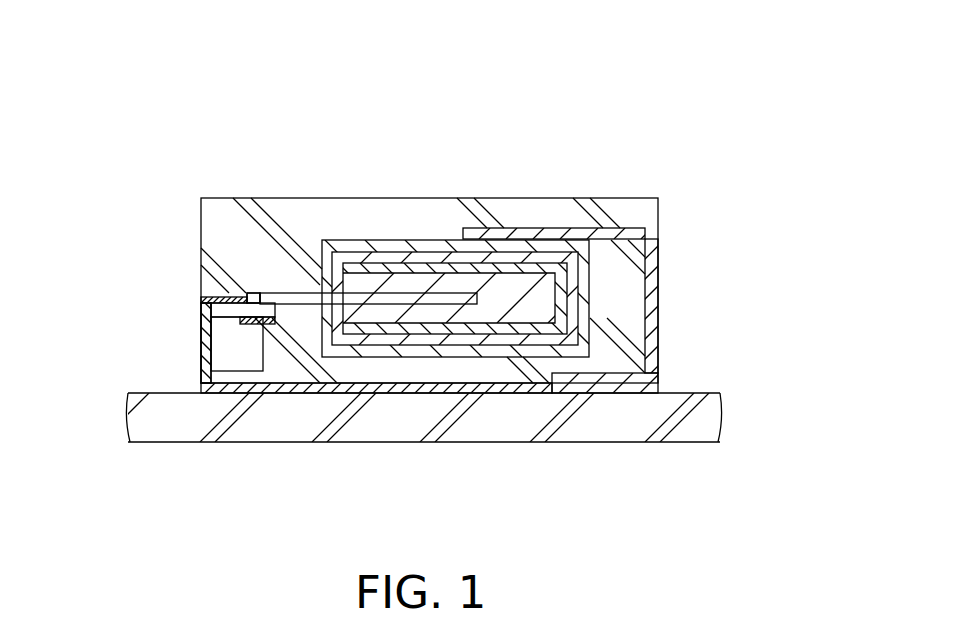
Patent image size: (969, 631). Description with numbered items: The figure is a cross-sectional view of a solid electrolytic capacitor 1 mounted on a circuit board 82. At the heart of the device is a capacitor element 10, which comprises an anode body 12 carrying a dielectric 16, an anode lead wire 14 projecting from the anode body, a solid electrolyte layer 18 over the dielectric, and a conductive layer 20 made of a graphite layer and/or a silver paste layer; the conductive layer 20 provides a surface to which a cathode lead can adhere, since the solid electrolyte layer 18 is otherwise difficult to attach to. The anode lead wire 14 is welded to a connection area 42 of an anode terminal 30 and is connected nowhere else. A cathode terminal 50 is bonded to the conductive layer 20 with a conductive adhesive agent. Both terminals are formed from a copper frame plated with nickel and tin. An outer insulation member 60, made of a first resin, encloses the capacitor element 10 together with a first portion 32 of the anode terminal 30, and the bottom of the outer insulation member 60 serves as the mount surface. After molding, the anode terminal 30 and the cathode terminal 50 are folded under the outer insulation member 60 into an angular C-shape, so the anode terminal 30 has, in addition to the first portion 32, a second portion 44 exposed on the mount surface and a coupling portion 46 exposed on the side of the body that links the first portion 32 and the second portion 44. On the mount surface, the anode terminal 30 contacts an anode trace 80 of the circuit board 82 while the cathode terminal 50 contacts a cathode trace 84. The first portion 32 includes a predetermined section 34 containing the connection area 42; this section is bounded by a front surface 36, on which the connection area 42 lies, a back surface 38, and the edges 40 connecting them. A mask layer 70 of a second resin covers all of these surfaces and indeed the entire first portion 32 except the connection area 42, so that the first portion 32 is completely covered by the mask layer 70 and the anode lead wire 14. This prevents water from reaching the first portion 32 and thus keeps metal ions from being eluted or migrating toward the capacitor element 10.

The solid electrolytic capacitor 1 is at (519, 102).
The capacitor element 10 is at (495, 364).
The anode body 12 is at (438, 318).
The anode lead wire 14 is at (305, 296).
The dielectric 16 is at (375, 272).
The solid electrolyte layer 18 is at (417, 257).
The conductive layer 20 is at (457, 240).
The anode terminal 30 is at (197, 341).
The first portion 32 is at (247, 294).
The predetermined section 34 is at (238, 318).
The front surface 36 is at (258, 292).
The back surface 38 is at (266, 312).
The edges 40 is at (304, 383).
The connection area 42 is at (253, 298).
The second portion 44 is at (244, 324).
The coupling portion 46 is at (206, 343).
The cathode terminal 50 is at (652, 267).
The outer insulation member 60 is at (618, 207).
The mask layer 70 is at (224, 314).
The anode trace 80 is at (212, 391).
The circuit board 82 is at (596, 425).
The cathode trace 84 is at (620, 392).